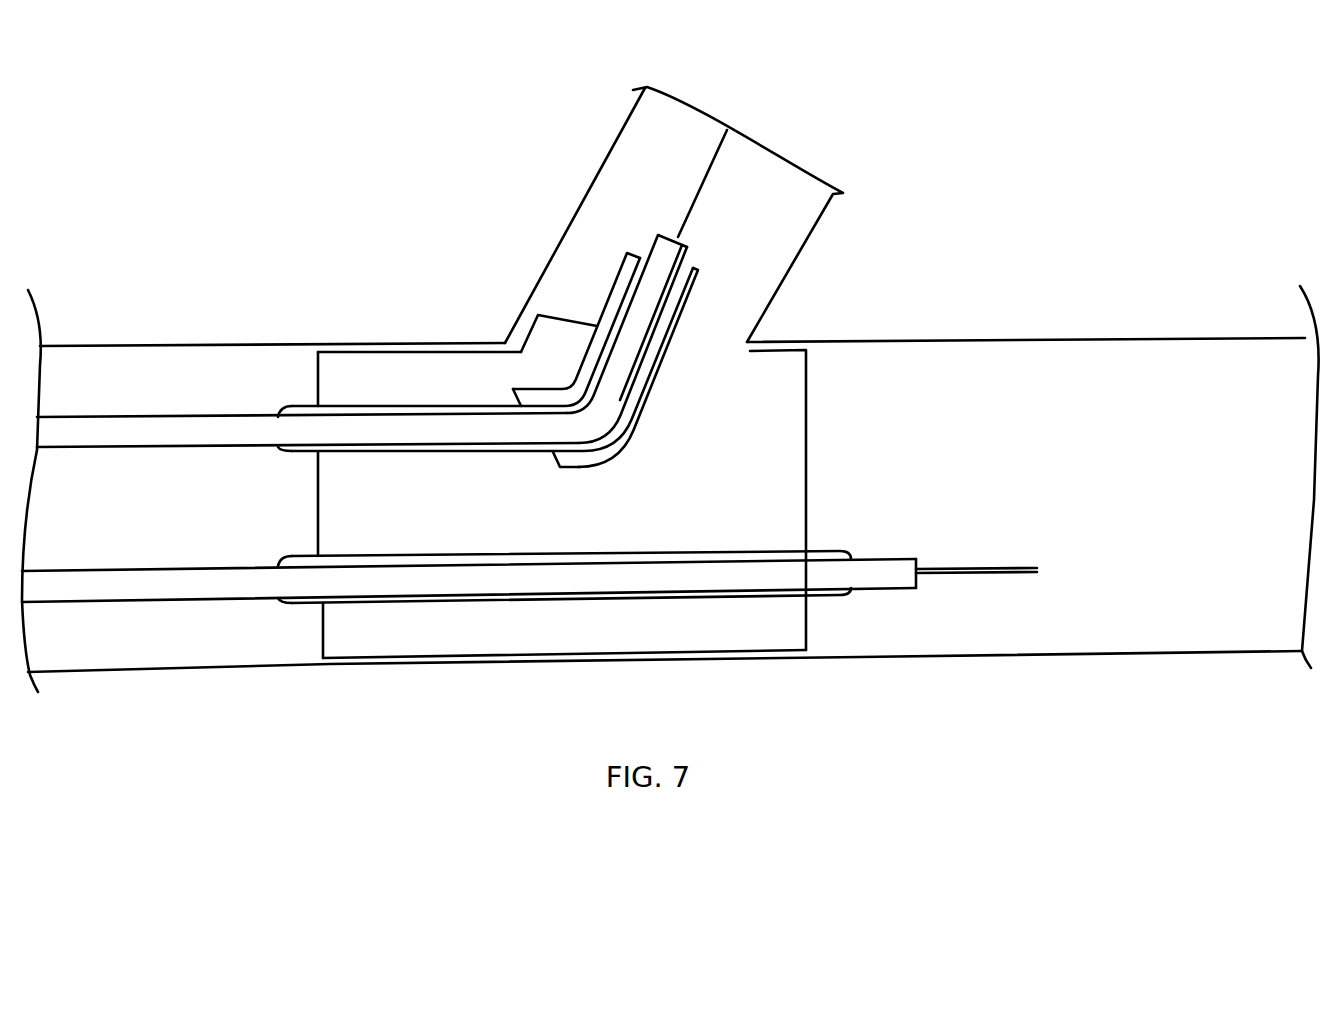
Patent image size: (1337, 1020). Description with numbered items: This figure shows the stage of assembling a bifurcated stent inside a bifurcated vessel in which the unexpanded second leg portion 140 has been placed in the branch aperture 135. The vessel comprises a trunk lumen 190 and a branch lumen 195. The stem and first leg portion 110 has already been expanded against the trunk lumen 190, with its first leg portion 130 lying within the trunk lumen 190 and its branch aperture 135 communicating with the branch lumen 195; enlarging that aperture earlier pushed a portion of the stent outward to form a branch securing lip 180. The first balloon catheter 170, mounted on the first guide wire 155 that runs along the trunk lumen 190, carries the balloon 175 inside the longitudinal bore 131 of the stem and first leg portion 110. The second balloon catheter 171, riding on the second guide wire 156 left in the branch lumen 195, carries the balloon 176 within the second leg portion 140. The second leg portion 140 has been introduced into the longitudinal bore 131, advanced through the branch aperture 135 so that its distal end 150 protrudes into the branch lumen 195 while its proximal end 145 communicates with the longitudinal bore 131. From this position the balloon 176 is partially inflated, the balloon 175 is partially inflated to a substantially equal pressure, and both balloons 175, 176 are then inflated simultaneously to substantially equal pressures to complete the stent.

The stem and first leg portion 110 is at (640, 657).
The first leg portion 130 is at (806, 650).
The longitudinal bore 131 is at (419, 505).
The branch aperture 135 is at (560, 318).
The second leg portion 140 is at (687, 307).
The proximal end 145 is at (573, 467).
The distal end 150 is at (687, 285).
The first guide wire 155 is at (971, 574).
The second guide wire 156 is at (690, 215).
The first balloon catheter 170 is at (92, 604).
The second balloon catheter 171 is at (102, 417).
The balloon 175 is at (305, 604).
The balloon 176 is at (300, 404).
The branch securing lip 180 is at (520, 335).
The trunk lumen 190 is at (1110, 410).
The branch lumen 195 is at (785, 243).